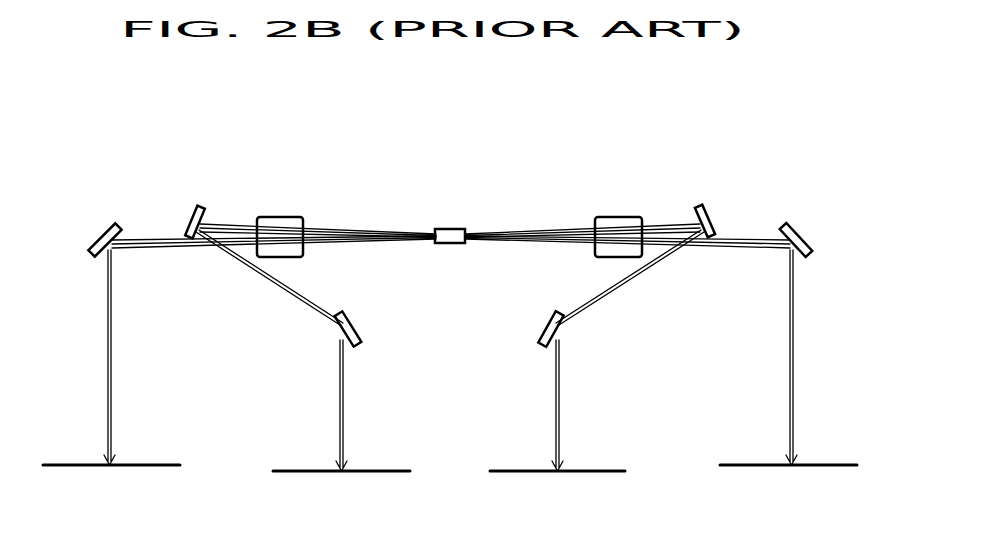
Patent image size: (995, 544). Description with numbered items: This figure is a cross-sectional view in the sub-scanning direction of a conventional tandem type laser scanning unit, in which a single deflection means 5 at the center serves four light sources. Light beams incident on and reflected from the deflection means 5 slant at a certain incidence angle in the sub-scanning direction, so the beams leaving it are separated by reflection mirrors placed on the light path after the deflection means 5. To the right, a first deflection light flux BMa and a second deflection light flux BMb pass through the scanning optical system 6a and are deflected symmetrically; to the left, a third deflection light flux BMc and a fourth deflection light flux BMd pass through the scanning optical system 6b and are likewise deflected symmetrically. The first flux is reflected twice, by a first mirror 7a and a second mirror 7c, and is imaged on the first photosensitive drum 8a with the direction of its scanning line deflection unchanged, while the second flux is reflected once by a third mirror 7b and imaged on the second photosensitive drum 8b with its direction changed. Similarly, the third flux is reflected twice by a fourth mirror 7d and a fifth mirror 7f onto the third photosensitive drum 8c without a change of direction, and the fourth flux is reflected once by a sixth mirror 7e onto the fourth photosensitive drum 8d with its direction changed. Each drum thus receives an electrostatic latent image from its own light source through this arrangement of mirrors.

The deflection means 5 is at (447, 229).
The scanning optical system 6a is at (617, 217).
The scanning optical system 6b is at (277, 217).
The first mirror 7a is at (703, 203).
The third mirror 7b is at (785, 224).
The second mirror 7c is at (543, 335).
The fourth mirror 7d is at (196, 206).
The sixth mirror 7e is at (114, 224).
The fifth mirror 7f is at (358, 333).
The first photosensitive drum 8a is at (833, 464).
The second photosensitive drum 8b is at (603, 470).
The third photosensitive drum 8c is at (388, 470).
The fourth photosensitive drum 8d is at (156, 464).
The first deflection light flux BMa is at (548, 244).
The second deflection light flux BMb is at (557, 232).
The third deflection light flux BMc is at (337, 228).
The fourth deflection light flux BMd is at (362, 242).